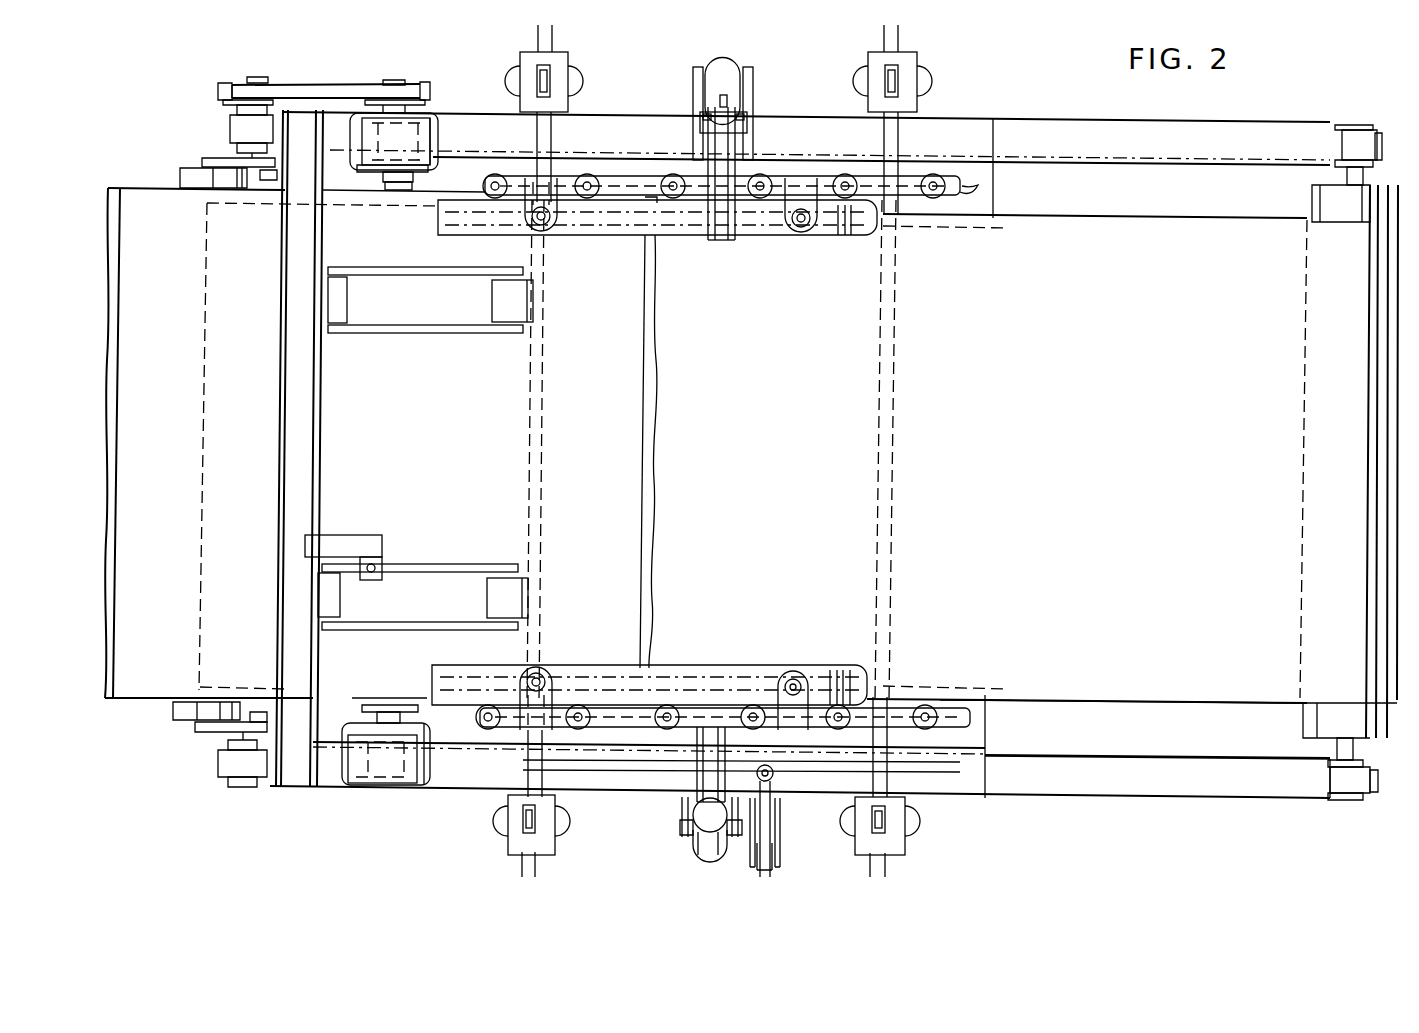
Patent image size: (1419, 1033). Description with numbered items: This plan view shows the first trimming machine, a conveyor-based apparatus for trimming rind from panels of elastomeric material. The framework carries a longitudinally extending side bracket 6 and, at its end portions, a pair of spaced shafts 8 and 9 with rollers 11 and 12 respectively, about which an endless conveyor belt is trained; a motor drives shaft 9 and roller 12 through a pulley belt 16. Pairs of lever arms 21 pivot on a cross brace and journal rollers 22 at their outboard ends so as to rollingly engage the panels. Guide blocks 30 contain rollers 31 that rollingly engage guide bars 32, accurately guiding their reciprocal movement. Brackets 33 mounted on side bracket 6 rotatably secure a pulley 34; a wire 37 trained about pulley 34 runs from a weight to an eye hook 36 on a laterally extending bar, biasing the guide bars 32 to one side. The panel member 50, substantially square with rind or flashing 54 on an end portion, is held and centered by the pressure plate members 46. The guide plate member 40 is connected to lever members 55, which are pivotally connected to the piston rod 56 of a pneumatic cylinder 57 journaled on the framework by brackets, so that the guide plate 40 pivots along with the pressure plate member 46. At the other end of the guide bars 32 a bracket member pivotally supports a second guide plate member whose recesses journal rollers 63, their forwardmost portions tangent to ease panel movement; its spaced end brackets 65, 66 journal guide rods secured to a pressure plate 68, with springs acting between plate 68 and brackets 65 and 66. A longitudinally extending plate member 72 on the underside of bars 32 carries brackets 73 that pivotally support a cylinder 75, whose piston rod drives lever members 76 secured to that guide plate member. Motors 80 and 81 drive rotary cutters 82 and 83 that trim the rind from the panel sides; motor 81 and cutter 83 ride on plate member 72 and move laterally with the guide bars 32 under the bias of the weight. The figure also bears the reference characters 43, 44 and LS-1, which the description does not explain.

The side bracket 6 is at (1133, 790).
The shaft 8 is at (1355, 748).
The drive shaft 9 is at (258, 77).
The roller 11 is at (1328, 207).
The roller 12 is at (200, 687).
The pulley belt 16 is at (345, 92).
The lever arms 21 is at (455, 275).
The rollers 22 is at (520, 312).
The guide block 30 is at (917, 72).
The rollers 31 is at (935, 106).
The guide bar 32 is at (900, 36).
The brackets 33 is at (750, 812).
The pulley 34 is at (770, 870).
The eye hook 36 is at (765, 770).
The wire 37 is at (763, 868).
The guide plate member 40 is at (967, 722).
The clevis 43 is at (805, 672).
The clevis 44 is at (547, 673).
The pressure plate members 46 is at (680, 673).
The panel member 50 is at (435, 446).
The rind or flashing 54 is at (656, 428).
The lever members 55 is at (705, 727).
The piston rod 56 is at (710, 848).
The pneumatic cylinder 57 is at (712, 862).
The rollers 63 is at (855, 177).
The end bracket 65 is at (530, 222).
The end bracket 66 is at (805, 232).
The pressure plate 68 is at (700, 236).
The plate member 72 is at (465, 162).
The brackets 73 is at (753, 150).
The cylinder 75 is at (722, 57).
The lever members 76 is at (730, 235).
The motor 80 is at (378, 775).
The motor 81 is at (372, 130).
The rotary cutter 82 is at (385, 703).
The rotary cutter 83 is at (390, 192).
The limit switch LS-1 is at (380, 555).